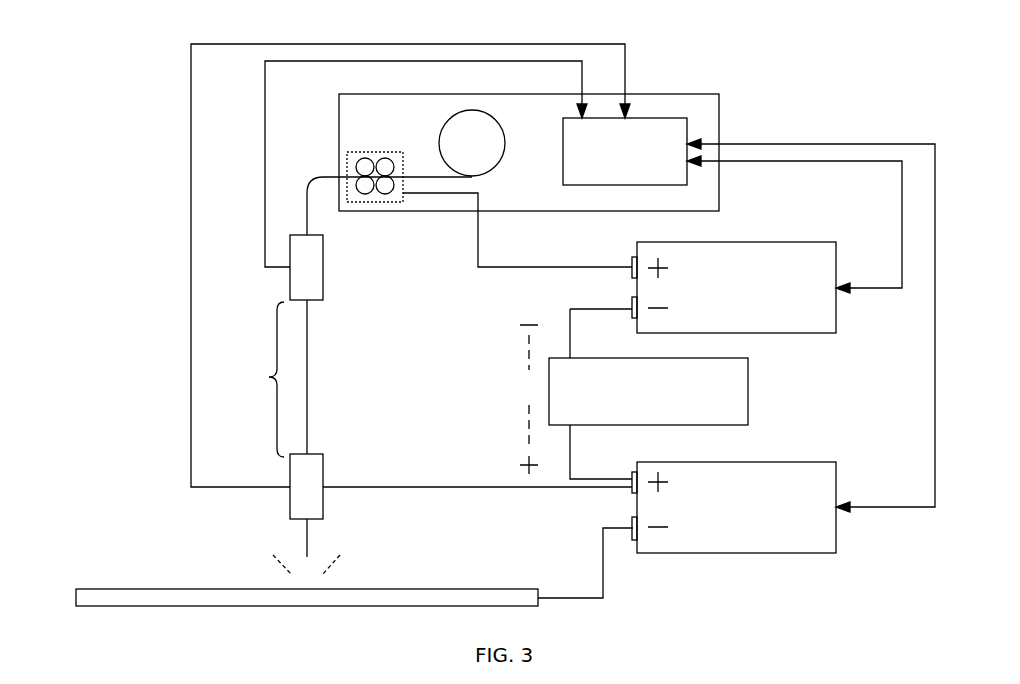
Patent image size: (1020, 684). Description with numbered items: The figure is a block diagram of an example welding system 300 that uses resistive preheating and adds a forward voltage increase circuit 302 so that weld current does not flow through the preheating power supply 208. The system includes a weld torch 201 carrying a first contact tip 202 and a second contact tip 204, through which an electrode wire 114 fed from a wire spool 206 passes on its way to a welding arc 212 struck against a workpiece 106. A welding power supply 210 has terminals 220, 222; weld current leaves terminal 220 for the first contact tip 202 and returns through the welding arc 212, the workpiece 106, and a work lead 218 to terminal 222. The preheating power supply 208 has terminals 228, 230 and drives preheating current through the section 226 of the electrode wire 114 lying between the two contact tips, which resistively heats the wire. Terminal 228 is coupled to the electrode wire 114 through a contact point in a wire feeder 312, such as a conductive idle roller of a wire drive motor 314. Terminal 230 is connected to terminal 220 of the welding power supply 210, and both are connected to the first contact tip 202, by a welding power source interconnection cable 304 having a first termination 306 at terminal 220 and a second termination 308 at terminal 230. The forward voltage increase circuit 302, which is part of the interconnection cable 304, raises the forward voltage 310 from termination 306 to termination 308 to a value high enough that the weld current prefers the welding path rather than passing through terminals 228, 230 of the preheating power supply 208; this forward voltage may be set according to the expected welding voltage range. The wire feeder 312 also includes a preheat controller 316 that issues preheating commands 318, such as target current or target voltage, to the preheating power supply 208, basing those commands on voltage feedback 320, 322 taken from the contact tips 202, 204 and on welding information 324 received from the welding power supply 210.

The welding system 300 is at (130, 135).
The weld torch 201 is at (164, 202).
The voltage feedback 320 is at (191, 76).
The voltage feedback 322 is at (264, 170).
The wire feeder 312 is at (719, 94).
The preheat controller 316 is at (563, 185).
The wire spool 206 is at (494, 122).
The wire drive motor 314 is at (347, 152).
The second contact tip 204 is at (323, 259).
The first contact tip 202 is at (323, 473).
The section of the electrode wire 226 is at (259, 389).
The electrode wire 114 is at (305, 550).
The welding arc 212 is at (282, 563).
The workpiece 106 is at (76, 607).
The work lead 218 is at (603, 598).
The preheating power supply 208 is at (836, 242).
The terminal 228 is at (632, 257).
The terminal 230 is at (632, 319).
The second termination 308 is at (632, 297).
The welding power source interconnection cable 304 is at (551, 299).
The forward voltage 310 is at (544, 399).
The forward voltage increase circuit 302 is at (748, 390).
The welding power supply 210 is at (836, 462).
The terminal 220 is at (632, 471).
The terminal 222 is at (632, 541).
The first termination 306 is at (630, 492).
The preheating commands 318 is at (808, 162).
The welding information 324 is at (846, 143).